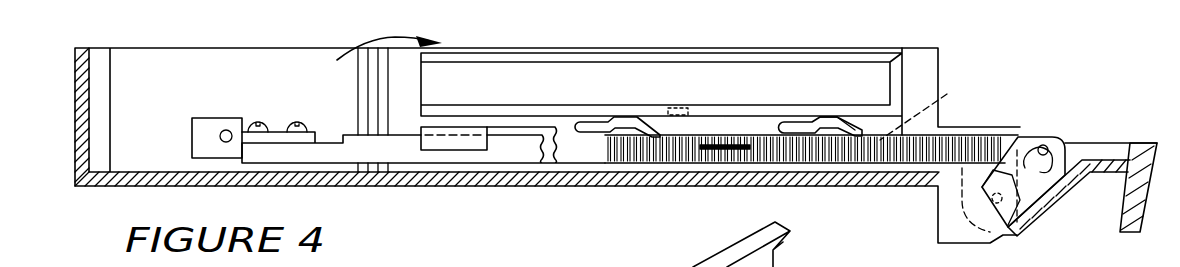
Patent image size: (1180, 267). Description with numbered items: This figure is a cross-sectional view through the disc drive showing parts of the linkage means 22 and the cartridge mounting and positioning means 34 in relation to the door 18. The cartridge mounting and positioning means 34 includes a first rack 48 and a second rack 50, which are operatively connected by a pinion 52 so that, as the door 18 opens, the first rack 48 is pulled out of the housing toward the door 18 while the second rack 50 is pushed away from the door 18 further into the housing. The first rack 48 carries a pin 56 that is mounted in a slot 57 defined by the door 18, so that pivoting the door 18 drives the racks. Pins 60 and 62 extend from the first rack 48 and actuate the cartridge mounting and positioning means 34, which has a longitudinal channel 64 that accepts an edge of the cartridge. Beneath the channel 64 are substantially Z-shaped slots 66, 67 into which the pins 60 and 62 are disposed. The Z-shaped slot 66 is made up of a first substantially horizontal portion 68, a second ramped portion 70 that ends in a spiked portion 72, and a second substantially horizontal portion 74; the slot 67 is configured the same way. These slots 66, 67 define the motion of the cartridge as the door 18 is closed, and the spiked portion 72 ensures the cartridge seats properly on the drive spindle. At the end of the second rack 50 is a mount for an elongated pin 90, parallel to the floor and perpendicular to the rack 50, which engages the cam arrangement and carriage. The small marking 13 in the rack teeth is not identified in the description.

The linkage means 22 is at (496, 206).
The cartridge mounting and positioning means 34 is at (371, 55).
The elongated pin 90 is at (226, 130).
The second rack 50 is at (350, 130).
The longitudinal channel 64 is at (875, 62).
The Z-shaped slot 67 is at (590, 145).
The Z-shaped slot 66 is at (832, 143).
The pinion 52 is at (722, 149).
The pin 62 is at (682, 133).
The second substantially horizontal portion 74 is at (792, 123).
The spiked portion 72 is at (826, 117).
The second ramped portion 70 is at (850, 130).
The tooth 13 is at (880, 144).
The first substantially horizontal portion 68 is at (931, 107).
The pin 60 is at (905, 127).
The first rack 48 is at (995, 167).
The pin 56 is at (1047, 148).
The slot 57 is at (1052, 200).
The door 18 is at (1122, 219).